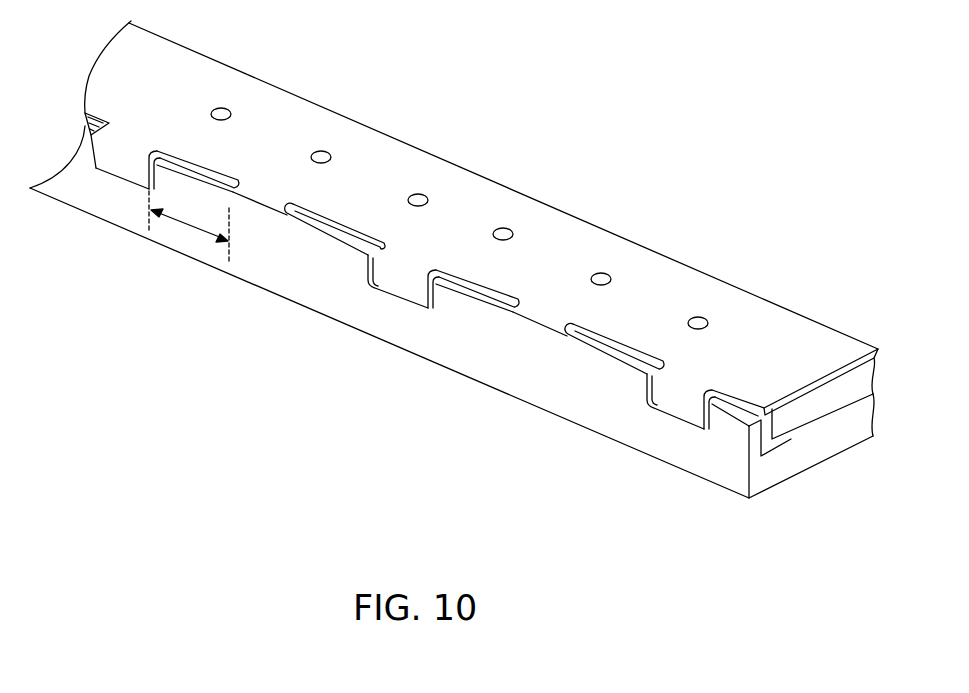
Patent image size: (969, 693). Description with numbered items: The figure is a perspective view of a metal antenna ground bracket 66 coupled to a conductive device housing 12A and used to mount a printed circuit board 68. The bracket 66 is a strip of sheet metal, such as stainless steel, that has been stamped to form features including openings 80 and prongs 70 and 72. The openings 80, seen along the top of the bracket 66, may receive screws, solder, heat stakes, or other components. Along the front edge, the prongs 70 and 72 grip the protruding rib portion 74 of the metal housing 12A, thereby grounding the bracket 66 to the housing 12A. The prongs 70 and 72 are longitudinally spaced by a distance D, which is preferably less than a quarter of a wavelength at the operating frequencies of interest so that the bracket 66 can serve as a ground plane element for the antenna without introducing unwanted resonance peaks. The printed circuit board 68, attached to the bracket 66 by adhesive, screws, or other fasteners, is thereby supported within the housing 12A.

The metal bracket 66 is at (455, 176).
The openings 80 is at (410, 185).
The prongs 70 is at (107, 155).
The protruding rib portion 74 is at (243, 200).
The prongs 72 is at (251, 188).
The printed circuit board 68 is at (806, 393).
The metal housing 12A is at (771, 461).
The distance D is at (180, 219).